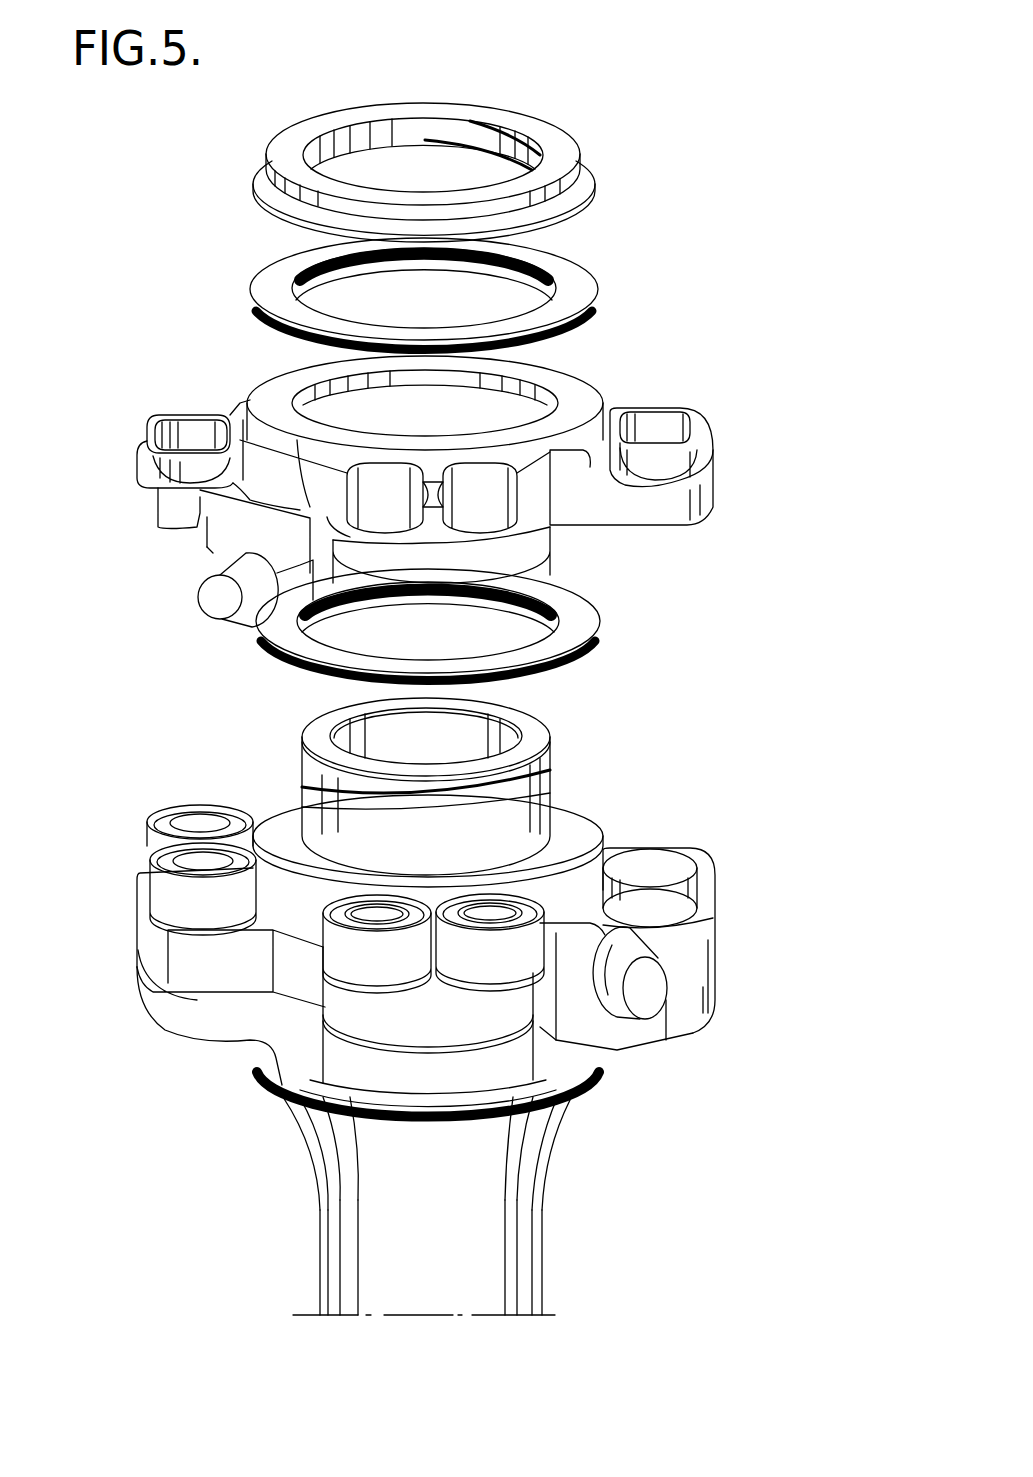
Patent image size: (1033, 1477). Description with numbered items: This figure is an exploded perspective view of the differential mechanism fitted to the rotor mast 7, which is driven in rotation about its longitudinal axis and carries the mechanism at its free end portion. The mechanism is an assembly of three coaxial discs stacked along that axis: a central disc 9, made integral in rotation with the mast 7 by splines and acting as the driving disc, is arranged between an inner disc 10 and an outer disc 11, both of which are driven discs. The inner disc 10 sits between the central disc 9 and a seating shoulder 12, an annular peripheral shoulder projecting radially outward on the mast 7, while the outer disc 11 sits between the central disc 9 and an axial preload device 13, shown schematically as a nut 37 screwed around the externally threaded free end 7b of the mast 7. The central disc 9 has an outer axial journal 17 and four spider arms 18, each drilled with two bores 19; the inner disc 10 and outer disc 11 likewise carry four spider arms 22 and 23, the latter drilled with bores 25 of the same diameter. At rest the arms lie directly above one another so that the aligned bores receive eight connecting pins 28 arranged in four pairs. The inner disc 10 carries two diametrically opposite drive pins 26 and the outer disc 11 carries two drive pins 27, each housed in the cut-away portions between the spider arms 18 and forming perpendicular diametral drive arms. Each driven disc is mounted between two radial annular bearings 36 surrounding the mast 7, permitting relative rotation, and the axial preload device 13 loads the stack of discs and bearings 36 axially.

The mast 7 is at (457, 1206).
The externally threaded free end 7b is at (532, 733).
The central disc 9 is at (436, 969).
The inner disc 10 is at (265, 1057).
The outer disc 11 is at (424, 483).
The seating shoulder 12 is at (540, 1125).
The axial preload device 13 is at (450, 131).
The outer axial journal 17 is at (297, 890).
The spider arms 18 is at (692, 945).
The bores 19 is at (660, 907).
The spider arms 22 is at (692, 995).
The spider arms 23 is at (150, 497).
The bores 25 is at (665, 468).
The drive pins 26 is at (648, 1000).
The drive pins 27 is at (220, 597).
The connecting pins 28 is at (172, 902).
The radial annular bearings 36 is at (598, 267).
The nut 37 is at (528, 128).